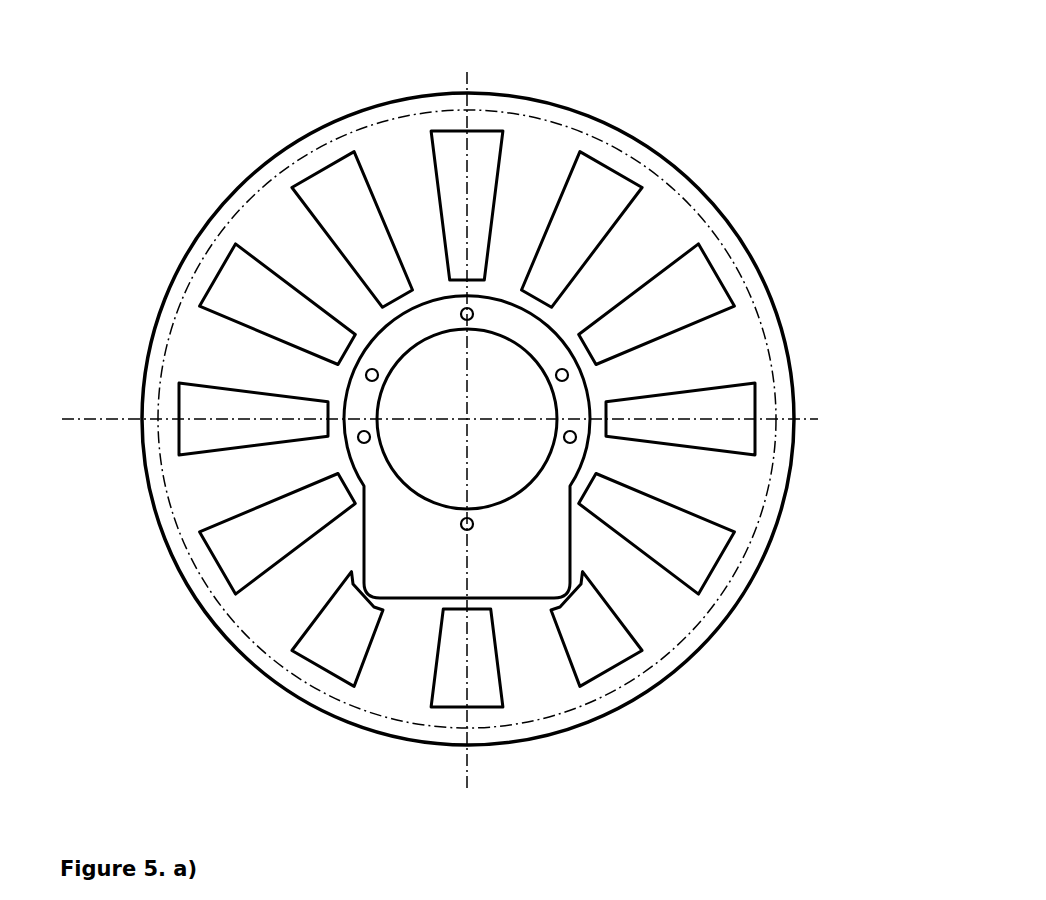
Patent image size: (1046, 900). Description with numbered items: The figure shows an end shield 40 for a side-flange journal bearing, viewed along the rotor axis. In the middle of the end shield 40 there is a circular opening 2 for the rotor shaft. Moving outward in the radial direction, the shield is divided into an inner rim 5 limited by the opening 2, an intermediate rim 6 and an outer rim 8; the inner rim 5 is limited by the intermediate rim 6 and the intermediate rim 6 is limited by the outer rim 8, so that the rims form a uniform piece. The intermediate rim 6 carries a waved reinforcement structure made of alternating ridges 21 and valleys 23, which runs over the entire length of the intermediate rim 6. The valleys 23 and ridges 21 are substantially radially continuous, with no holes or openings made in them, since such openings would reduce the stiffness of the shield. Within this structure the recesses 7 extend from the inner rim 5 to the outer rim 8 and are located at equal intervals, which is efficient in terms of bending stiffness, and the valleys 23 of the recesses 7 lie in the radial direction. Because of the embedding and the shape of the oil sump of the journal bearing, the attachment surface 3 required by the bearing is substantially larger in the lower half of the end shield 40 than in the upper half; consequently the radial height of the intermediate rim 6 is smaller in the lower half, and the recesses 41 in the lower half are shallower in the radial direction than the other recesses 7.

The opening 2 is at (520, 412).
The attachment surface 3 is at (614, 492).
The inner rim 5 is at (593, 450).
The intermediate rim 6 is at (639, 225).
The recesses 7 is at (727, 278).
The outer rim 8 is at (535, 112).
The ridges 21 is at (593, 292).
The valleys 23 is at (626, 334).
The end shield 40 is at (681, 87).
The recesses in the lower half 41 is at (600, 615).